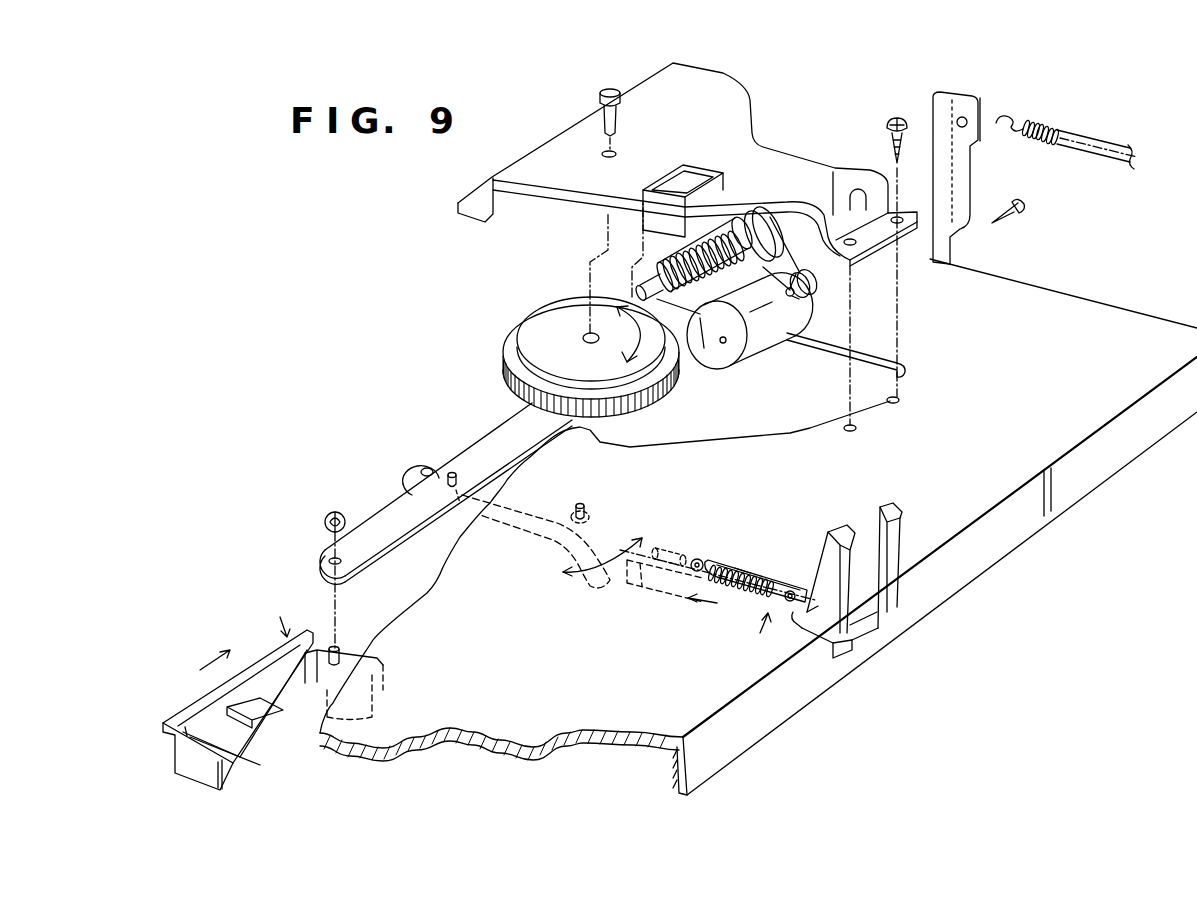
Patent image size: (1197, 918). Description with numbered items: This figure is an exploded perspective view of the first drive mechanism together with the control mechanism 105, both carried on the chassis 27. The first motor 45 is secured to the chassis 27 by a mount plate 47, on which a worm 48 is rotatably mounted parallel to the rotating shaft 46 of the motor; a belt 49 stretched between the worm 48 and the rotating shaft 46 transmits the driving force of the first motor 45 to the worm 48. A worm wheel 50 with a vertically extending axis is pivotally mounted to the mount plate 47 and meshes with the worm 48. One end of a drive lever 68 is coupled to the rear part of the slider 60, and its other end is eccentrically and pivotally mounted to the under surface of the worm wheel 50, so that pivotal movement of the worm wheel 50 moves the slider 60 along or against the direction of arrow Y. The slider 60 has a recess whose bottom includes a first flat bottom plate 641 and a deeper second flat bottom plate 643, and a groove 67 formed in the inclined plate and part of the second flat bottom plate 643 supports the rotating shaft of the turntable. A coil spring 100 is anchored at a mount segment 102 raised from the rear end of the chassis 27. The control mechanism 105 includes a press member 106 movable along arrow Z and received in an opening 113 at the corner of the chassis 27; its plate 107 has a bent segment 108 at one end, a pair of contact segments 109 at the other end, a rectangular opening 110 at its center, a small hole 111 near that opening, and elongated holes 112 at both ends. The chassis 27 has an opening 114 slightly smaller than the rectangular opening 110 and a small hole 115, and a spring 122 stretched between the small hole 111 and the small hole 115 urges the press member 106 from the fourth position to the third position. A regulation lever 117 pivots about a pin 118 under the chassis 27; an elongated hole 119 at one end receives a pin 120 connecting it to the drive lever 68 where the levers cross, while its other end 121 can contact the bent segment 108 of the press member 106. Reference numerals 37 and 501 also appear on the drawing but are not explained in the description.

The chassis 27 is at (1083, 430).
The pivot shaft 37 is at (311, 544).
The first motor 45 is at (778, 345).
The rotating shaft 46 is at (797, 303).
The mount plate 47 is at (744, 104).
The worm 48 is at (647, 275).
The belt 49 is at (787, 265).
The worm wheel 50 is at (510, 350).
The screw 501 is at (621, 113).
The slider 60 is at (238, 691).
The groove 67 is at (250, 725).
The drive lever 68 is at (377, 525).
The coil spring 100 is at (1050, 118).
The mount segment 102 is at (973, 110).
The control mechanism 105 is at (757, 640).
The press member 106 is at (904, 611).
The plate 107 is at (708, 582).
The bent segment 108 is at (642, 578).
The contact segments 109 is at (843, 538).
The rectangular opening 110 is at (709, 600).
The small hole 111 is at (806, 586).
The elongated holes 112 is at (669, 547).
The opening 113 is at (840, 650).
The opening 114 is at (788, 591).
The small hole 115 is at (696, 559).
The regulation lever 117 is at (530, 517).
The pin 118 is at (580, 504).
The elongated hole 119 is at (440, 463).
The pin 120 is at (453, 473).
The other end 121 is at (602, 588).
The spring 122 is at (738, 570).
The first flat bottom plate 641 is at (217, 723).
The second flat bottom plate 643 is at (373, 713).
The arrow Z is at (713, 609).